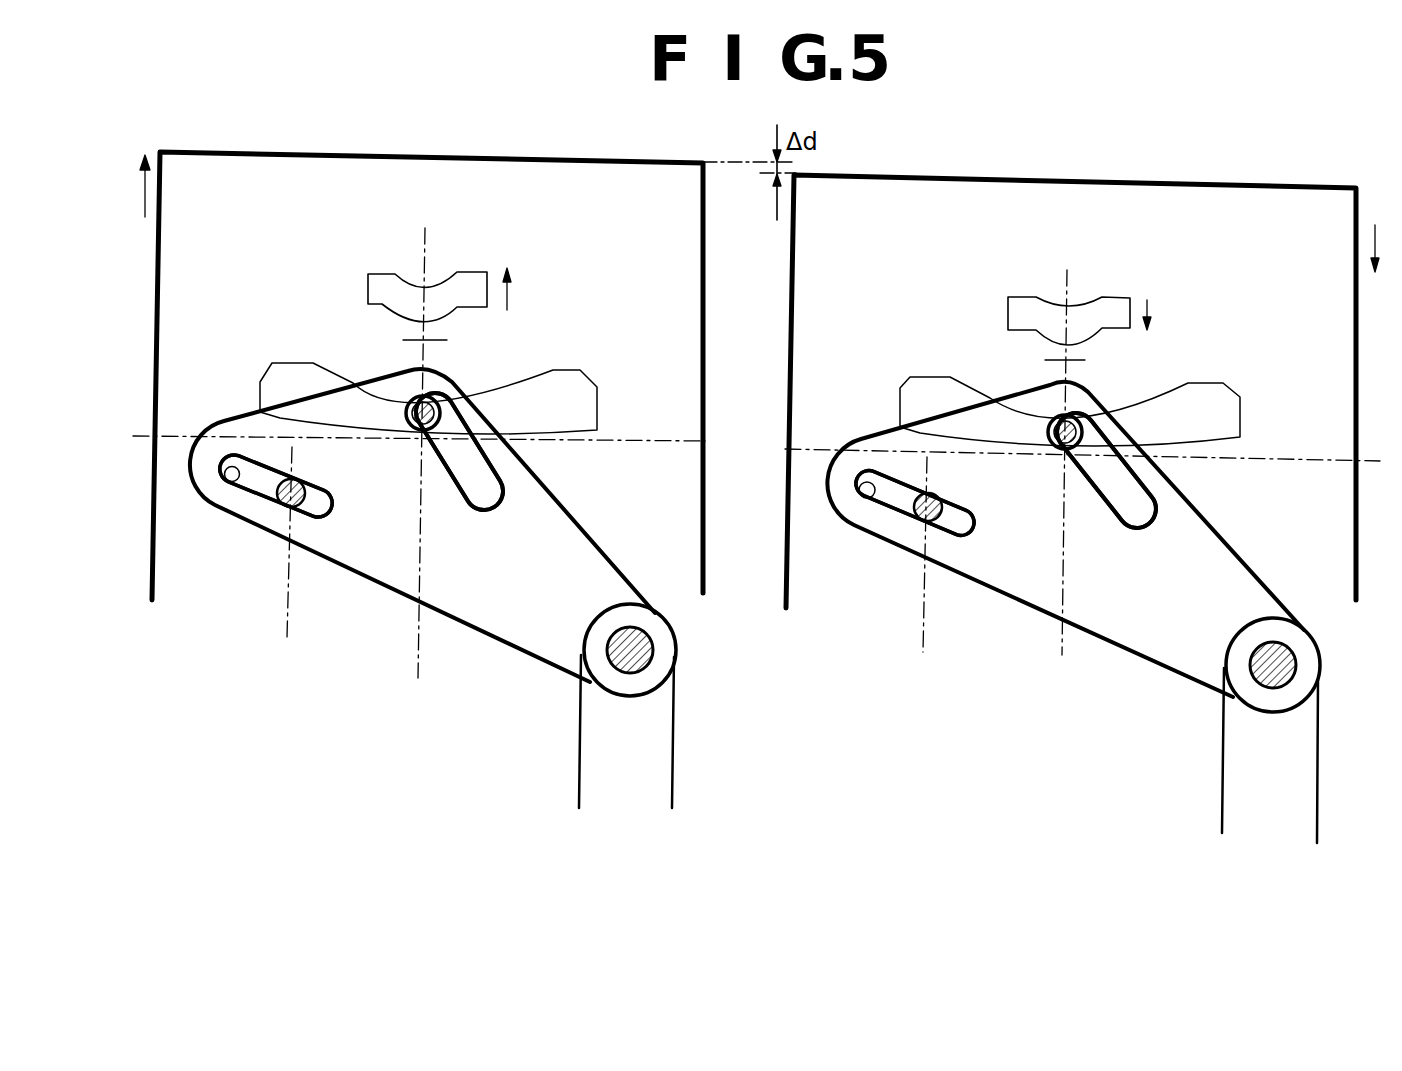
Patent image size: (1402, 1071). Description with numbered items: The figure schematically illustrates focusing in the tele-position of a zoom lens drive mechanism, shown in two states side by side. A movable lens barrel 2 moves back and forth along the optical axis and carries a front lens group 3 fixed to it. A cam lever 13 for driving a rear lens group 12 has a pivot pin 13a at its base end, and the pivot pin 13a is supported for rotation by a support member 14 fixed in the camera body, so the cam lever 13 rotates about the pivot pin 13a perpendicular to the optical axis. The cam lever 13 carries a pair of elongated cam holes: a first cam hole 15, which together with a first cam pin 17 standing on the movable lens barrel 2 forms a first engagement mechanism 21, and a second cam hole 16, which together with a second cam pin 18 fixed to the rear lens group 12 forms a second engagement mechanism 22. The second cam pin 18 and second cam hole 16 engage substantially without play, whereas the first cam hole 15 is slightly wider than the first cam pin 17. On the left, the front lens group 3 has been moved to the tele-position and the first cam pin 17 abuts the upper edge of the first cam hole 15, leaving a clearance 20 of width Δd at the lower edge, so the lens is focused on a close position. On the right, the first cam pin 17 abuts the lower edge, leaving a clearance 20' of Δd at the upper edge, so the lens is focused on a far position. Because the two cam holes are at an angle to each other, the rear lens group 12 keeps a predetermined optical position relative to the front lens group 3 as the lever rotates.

The movable lens barrel 2 is at (262, 153).
The front lens group 3 is at (377, 276).
The rear lens group 12 is at (577, 403).
The cam lever 13 is at (383, 567).
The pivot pin 13a is at (606, 647).
The support member 14 is at (600, 750).
The first cam hole 15 is at (500, 467).
The second cam hole 16 is at (240, 487).
The first cam pin 17 is at (457, 400).
The second cam pin 18 is at (277, 503).
The clearance 20 is at (397, 445).
The clearance 20' is at (1122, 390).
The first engagement mechanism 21 is at (625, 322).
The second engagement mechanism 22 is at (268, 572).